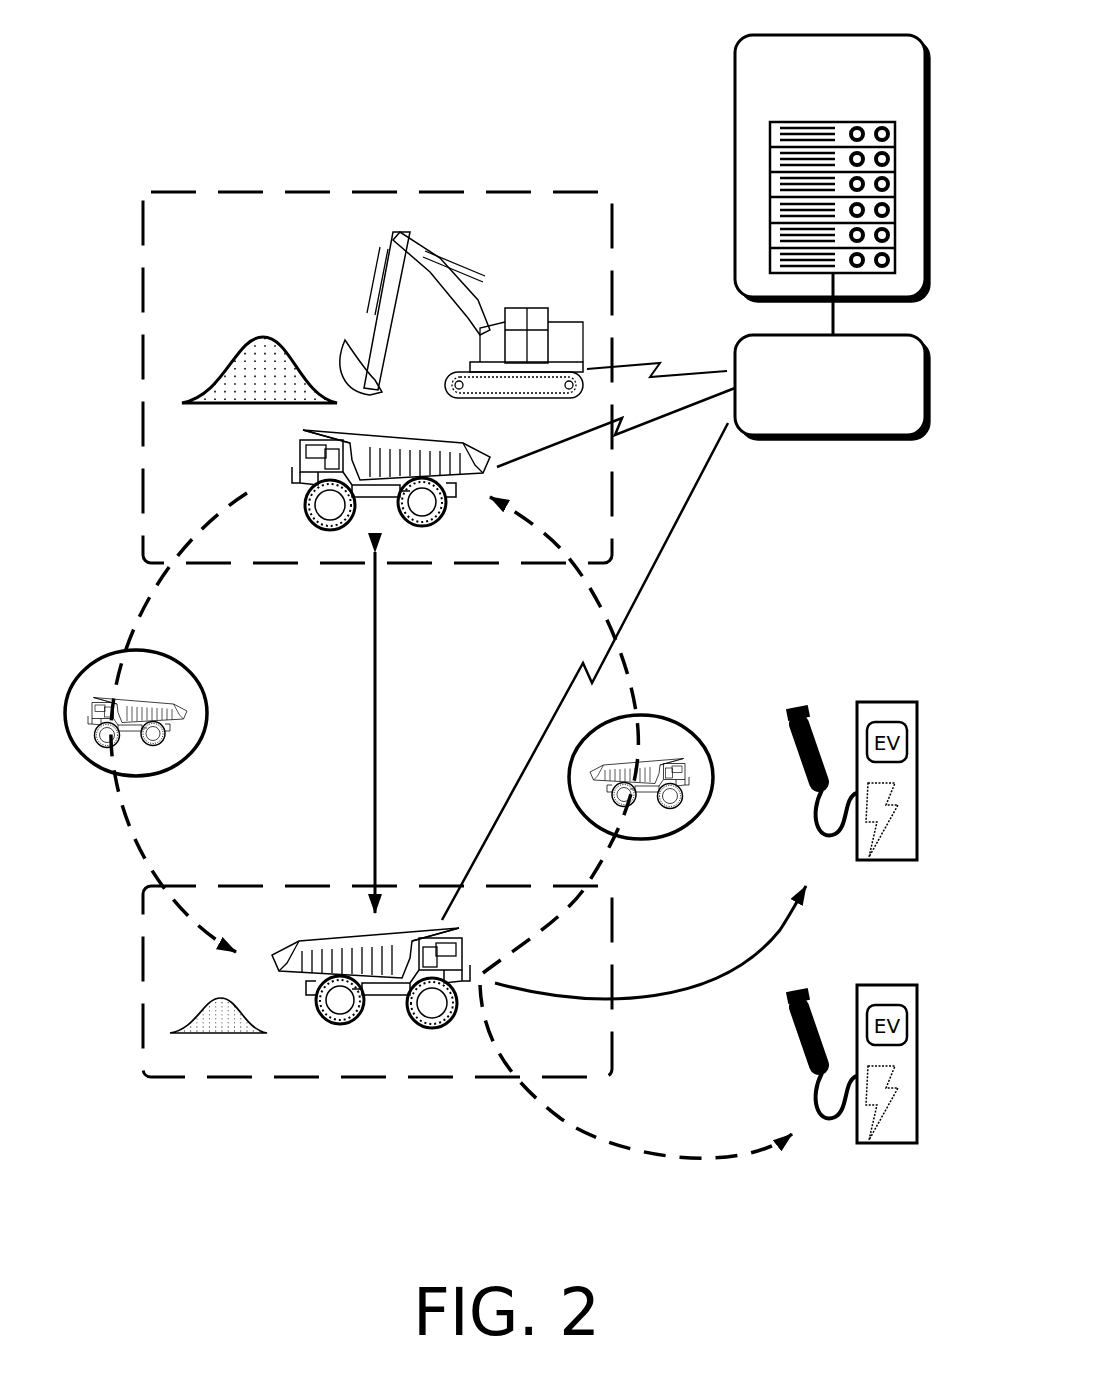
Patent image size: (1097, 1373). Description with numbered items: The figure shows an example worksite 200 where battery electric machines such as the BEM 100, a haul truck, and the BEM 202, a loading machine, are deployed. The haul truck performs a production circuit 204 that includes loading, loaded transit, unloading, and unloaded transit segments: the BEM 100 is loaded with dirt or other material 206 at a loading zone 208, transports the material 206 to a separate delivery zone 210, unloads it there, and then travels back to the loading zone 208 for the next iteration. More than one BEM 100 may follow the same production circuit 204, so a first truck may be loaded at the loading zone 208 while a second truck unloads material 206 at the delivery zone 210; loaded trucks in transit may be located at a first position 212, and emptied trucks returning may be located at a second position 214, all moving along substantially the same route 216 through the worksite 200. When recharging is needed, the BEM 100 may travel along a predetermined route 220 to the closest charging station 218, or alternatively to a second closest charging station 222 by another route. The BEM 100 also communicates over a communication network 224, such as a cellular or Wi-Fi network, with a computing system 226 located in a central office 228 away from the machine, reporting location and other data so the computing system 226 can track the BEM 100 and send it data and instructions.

The BEM 100 is at (330, 503).
The worksite 200 is at (228, 116).
The BEM 202 is at (525, 330).
The production circuit 204 is at (375, 732).
The material 206 is at (252, 375).
The loading zone 208 is at (218, 247).
The delivery zone 210 is at (583, 1046).
The first position 212 is at (135, 650).
The second position 214 is at (664, 838).
The route 216 is at (130, 840).
The charging station 218 is at (855, 794).
The predetermined route 220 is at (650, 942).
The second closest charging station 222 is at (855, 1080).
The communication network 224 is at (851, 426).
The computing system 226 is at (885, 112).
The central office 228 is at (832, 155).